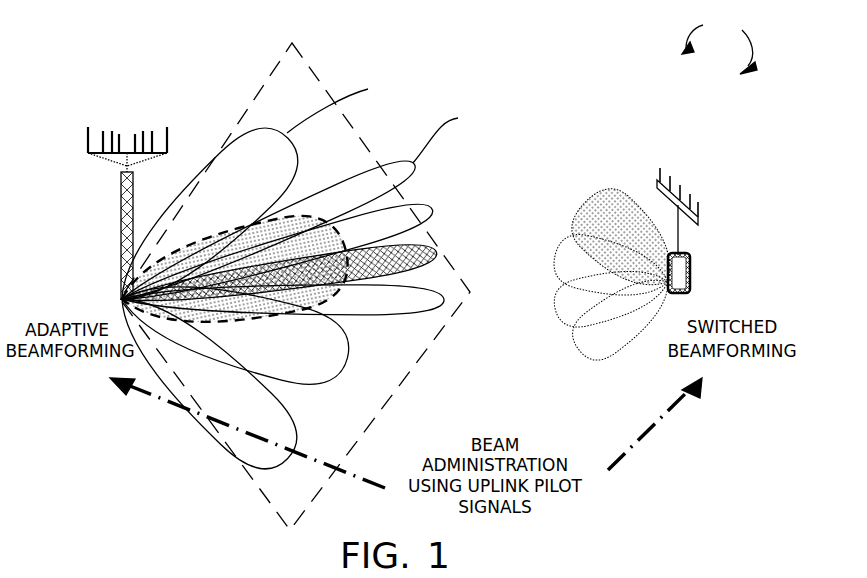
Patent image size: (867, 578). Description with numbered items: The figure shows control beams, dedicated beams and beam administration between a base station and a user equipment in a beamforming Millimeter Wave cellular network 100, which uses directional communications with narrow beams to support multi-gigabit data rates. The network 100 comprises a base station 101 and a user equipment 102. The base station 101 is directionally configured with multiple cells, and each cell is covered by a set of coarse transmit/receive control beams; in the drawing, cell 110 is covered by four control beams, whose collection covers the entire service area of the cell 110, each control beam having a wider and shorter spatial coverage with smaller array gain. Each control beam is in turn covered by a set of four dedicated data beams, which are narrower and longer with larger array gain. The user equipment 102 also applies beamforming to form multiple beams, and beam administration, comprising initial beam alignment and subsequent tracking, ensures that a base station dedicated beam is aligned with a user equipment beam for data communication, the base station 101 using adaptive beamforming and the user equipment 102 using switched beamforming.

The beamforming mmWave cellular network 100 is at (719, 47).
The base station 101 is at (125, 128).
The user equipment 102 is at (672, 162).
The cell 110 is at (358, 417).